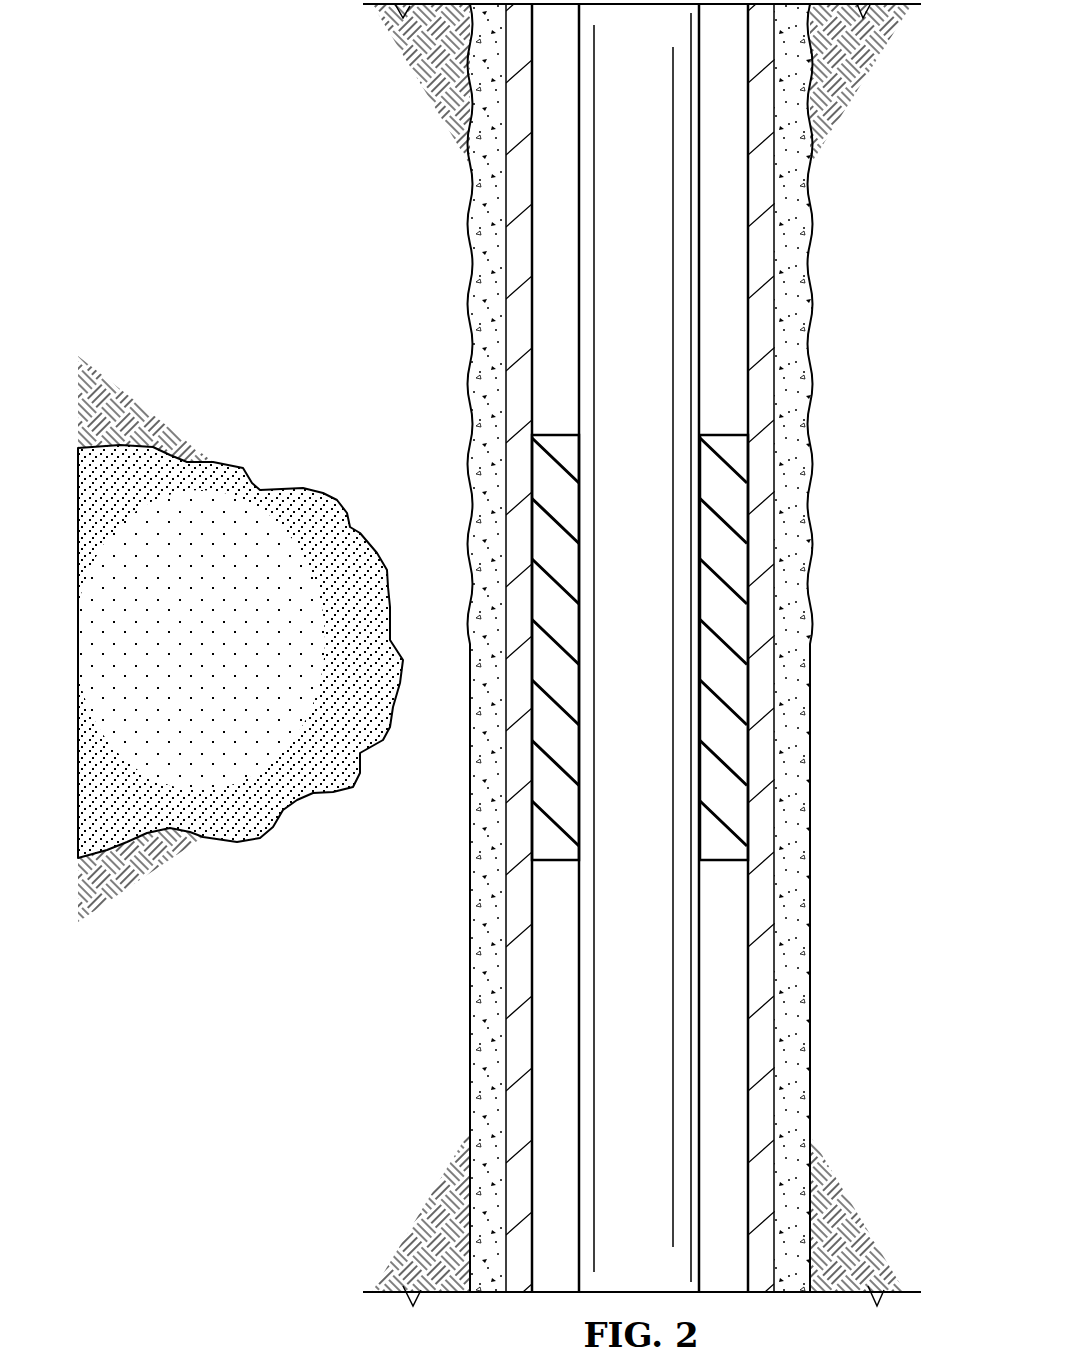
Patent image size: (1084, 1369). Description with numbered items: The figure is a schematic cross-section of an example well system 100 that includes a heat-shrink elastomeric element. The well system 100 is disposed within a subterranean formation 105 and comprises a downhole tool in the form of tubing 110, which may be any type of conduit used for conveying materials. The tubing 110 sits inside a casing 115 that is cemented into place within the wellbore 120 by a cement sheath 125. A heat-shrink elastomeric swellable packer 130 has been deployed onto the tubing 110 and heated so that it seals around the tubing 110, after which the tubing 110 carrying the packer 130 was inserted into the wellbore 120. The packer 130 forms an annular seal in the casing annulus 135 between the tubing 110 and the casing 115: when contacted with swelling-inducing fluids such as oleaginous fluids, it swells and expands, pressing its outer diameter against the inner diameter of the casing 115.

The well system 100 is at (184, 64).
The subterranean formation 105 is at (263, 660).
The tubing 110 is at (568, 268).
The casing 115 is at (750, 903).
The wellbore 120 is at (470, 1047).
The cement sheath 125 is at (803, 530).
The heat-shrink elastomeric swellable packer 130 is at (545, 866).
The casing annulus 135 is at (738, 248).